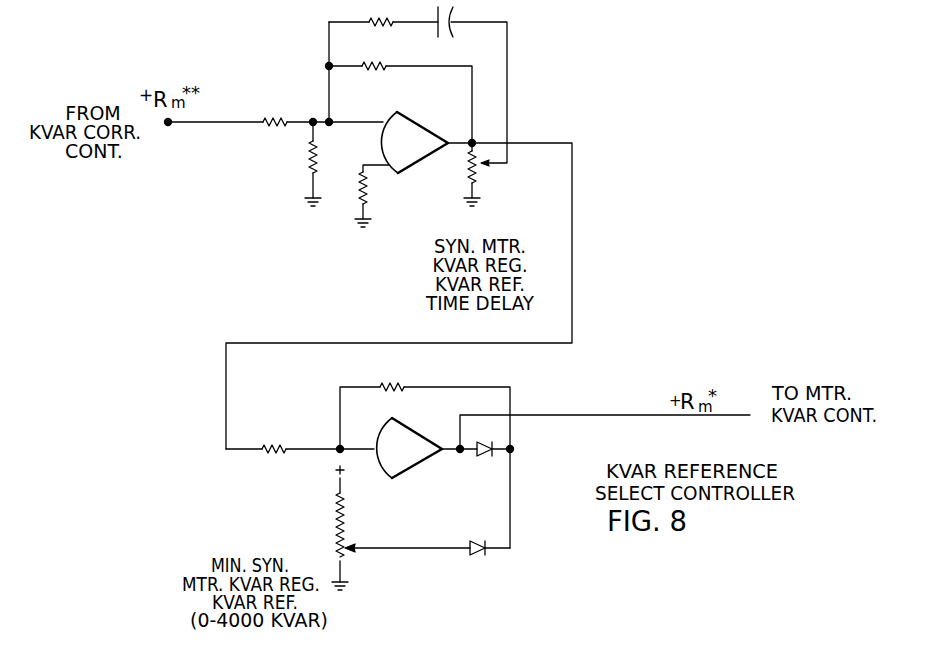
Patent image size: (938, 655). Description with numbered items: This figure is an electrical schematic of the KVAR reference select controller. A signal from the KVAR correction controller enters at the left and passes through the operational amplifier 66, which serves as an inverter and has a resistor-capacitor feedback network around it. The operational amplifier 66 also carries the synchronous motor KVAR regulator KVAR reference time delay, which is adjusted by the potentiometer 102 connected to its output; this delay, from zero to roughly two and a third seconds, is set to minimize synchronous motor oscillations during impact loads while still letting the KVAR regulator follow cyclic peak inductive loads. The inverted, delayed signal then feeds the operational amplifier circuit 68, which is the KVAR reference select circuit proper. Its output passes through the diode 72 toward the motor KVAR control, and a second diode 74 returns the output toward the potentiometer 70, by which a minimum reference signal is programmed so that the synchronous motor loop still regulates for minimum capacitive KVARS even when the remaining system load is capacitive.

The operational amplifier 66 is at (522, 128).
The operational amplifier circuit 68 is at (518, 413).
The potentiometer 70 is at (338, 504).
The diode 72 is at (483, 461).
The diode 74 is at (478, 541).
The potentiometer 102 is at (469, 171).